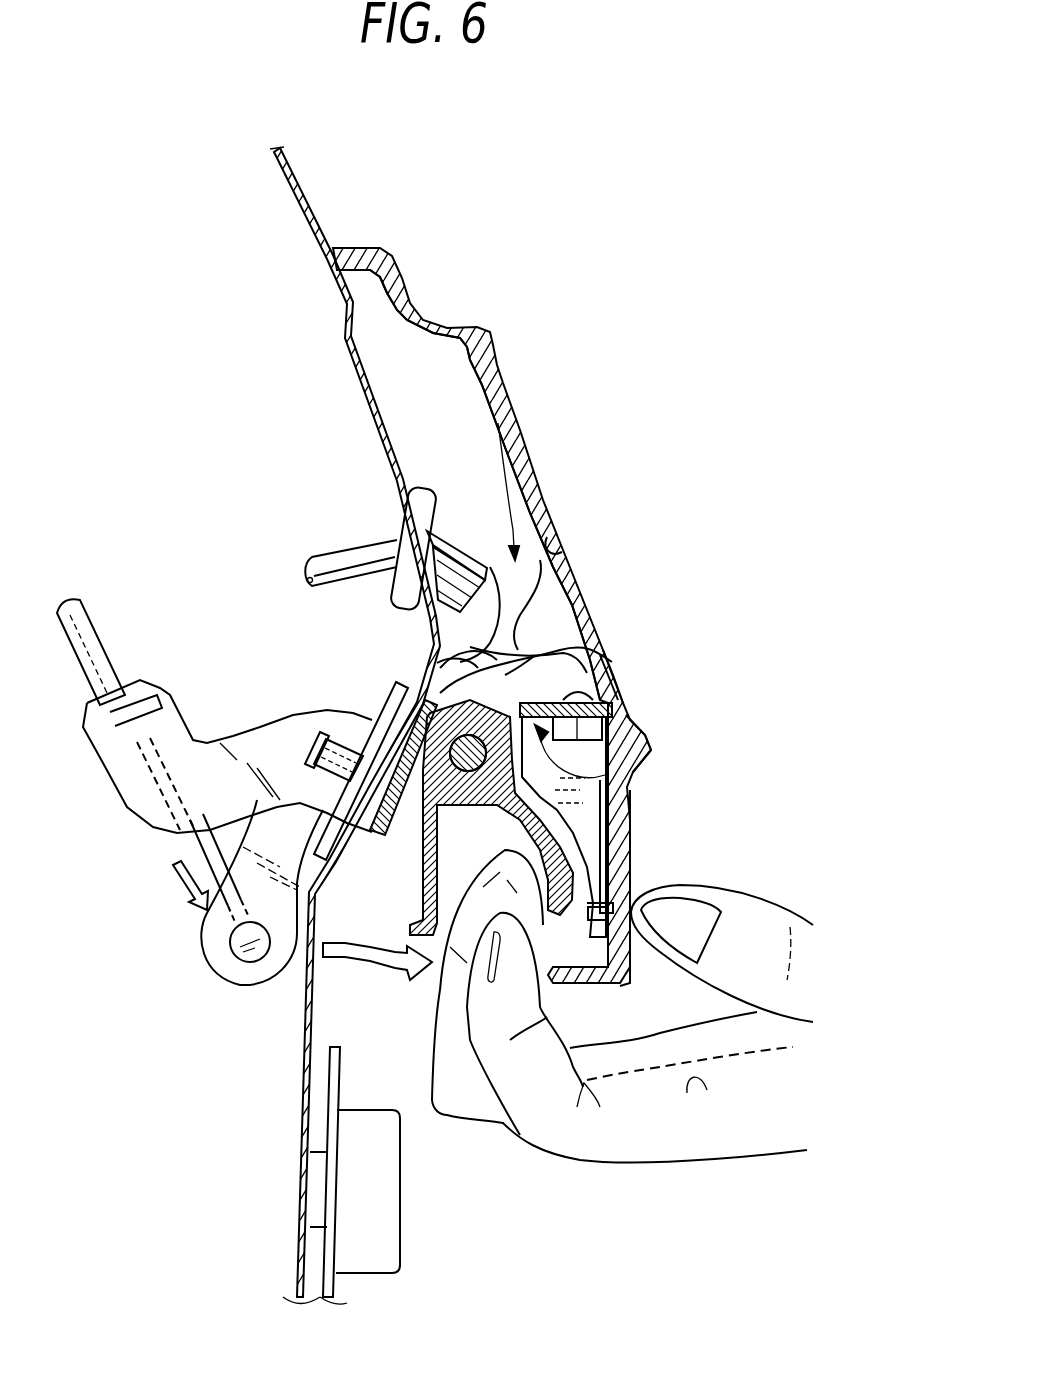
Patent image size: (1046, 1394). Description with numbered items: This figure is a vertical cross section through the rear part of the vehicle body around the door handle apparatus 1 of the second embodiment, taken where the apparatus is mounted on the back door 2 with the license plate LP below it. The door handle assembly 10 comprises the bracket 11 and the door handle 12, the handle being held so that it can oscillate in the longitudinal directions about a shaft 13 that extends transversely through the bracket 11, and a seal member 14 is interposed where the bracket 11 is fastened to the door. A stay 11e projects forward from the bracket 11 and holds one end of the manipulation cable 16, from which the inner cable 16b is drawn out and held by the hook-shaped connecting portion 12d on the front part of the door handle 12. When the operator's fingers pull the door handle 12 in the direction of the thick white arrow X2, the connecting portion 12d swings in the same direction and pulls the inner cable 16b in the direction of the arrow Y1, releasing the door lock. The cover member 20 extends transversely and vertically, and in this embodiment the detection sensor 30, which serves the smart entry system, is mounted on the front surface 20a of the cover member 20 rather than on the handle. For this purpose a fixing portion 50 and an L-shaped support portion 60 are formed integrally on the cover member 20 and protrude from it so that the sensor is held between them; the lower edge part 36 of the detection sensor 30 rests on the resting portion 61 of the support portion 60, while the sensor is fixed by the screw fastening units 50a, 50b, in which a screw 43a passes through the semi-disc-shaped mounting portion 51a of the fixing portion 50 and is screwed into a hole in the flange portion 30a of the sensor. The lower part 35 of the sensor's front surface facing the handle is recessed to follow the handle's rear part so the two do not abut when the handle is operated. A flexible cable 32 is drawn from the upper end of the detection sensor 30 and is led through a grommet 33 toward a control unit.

The door handle apparatus 1 is at (492, 615).
The back door 2 is at (305, 200).
The door handle assembly 10 is at (490, 402).
The bracket 11 is at (513, 655).
The stay 11e is at (137, 793).
The door handle 12 is at (628, 849).
The connecting portion 12d is at (218, 965).
The shaft 13 is at (533, 657).
The seal member 14 is at (395, 703).
The manipulation cable 16 is at (93, 645).
The inner cable 16b is at (185, 847).
The cover member 20 is at (500, 375).
The front surface 20a is at (557, 540).
The detection sensor 30 is at (598, 803).
The flange portion 30a is at (593, 727).
The cable 32 is at (490, 620).
The grommet 33 is at (390, 508).
The lower part 35 is at (607, 832).
The lower edge part 36 is at (582, 988).
The screw 43a is at (580, 693).
The fixing portion 50 is at (633, 763).
The screw fastening unit 50a is at (695, 670).
The screw fastening unit 50b is at (609, 677).
The mounting portion 51a is at (583, 708).
The support portion 60 is at (621, 988).
The resting portion 61 is at (638, 885).
The license plate LP is at (335, 1093).
The arrow X2 is at (377, 976).
The arrow Y1 is at (178, 887).